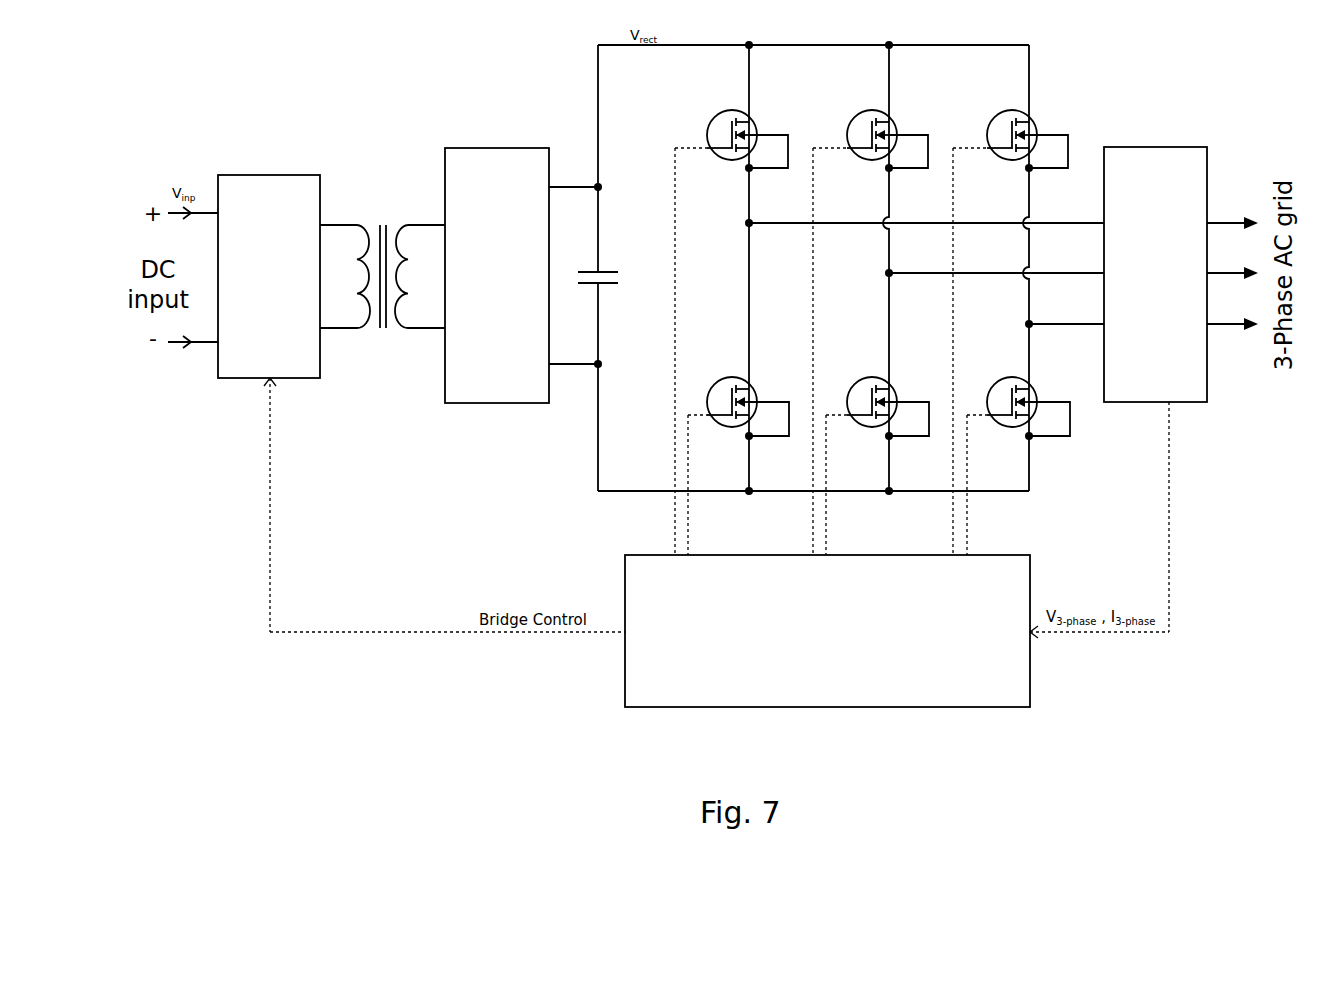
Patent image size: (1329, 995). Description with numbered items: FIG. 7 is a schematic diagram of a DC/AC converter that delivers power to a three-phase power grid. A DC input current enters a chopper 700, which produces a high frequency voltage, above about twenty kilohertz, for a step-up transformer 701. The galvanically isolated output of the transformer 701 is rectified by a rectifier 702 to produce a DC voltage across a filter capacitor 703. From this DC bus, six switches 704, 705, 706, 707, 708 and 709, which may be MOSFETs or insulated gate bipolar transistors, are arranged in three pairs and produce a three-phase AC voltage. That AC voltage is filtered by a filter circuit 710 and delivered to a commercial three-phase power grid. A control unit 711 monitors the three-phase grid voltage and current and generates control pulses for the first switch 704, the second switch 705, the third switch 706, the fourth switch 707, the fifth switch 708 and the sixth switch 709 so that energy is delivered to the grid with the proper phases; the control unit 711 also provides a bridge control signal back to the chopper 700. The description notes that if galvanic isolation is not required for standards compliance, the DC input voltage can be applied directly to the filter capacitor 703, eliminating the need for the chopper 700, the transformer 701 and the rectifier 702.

The chopper 700 is at (278, 175).
The step-up transformer T1 701 is at (382, 223).
The rectifier 702 is at (490, 147).
The filter capacitor C1 703 is at (603, 270).
The switch SW1 704 is at (710, 116).
The switch SW2 705 is at (716, 380).
The switch SW3 706 is at (849, 116).
The switch SW4 707 is at (855, 380).
The switch SW5 708 is at (989, 116).
The switch SW6 709 is at (995, 380).
The filter circuit 710 is at (1150, 146).
The control unit 711 is at (624, 566).